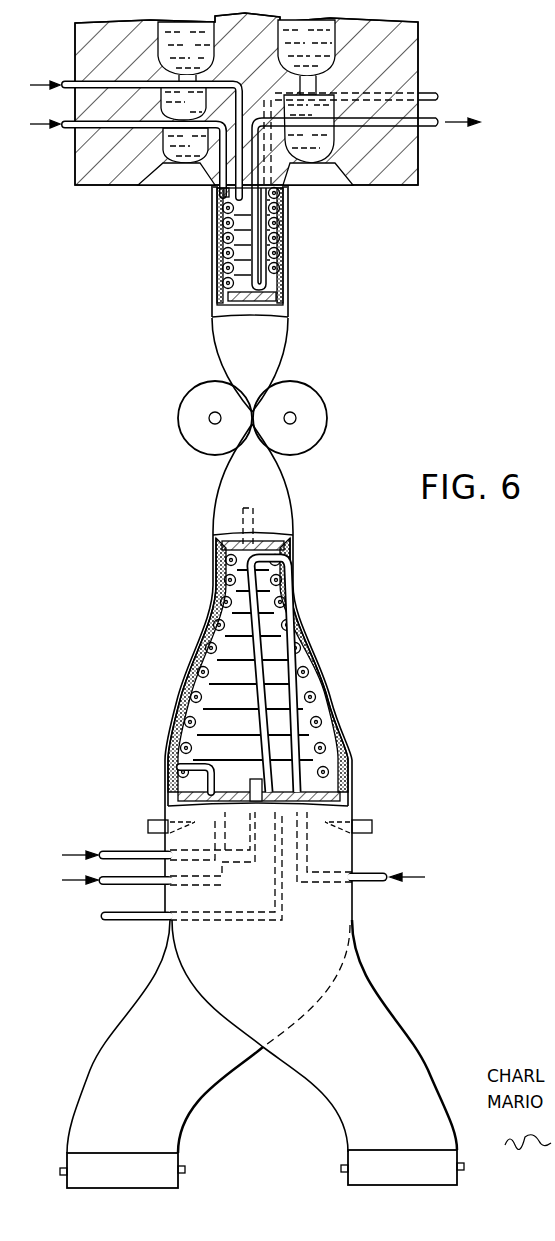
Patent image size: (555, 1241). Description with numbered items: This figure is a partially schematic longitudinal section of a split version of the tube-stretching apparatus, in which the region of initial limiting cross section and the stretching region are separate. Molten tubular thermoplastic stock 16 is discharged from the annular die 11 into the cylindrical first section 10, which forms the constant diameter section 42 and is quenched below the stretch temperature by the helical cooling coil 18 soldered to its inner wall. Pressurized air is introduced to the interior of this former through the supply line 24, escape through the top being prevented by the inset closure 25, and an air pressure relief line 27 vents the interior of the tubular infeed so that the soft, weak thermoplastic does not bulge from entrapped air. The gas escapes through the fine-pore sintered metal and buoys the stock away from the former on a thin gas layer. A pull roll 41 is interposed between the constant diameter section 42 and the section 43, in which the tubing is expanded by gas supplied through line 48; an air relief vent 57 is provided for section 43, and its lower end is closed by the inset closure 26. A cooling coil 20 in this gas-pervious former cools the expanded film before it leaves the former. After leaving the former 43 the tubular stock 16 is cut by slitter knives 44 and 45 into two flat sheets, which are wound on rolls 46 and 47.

The first section 10 is at (216, 210).
The annular die 11 is at (283, 173).
The tubular thermoplastic stock 16 is at (288, 302).
The helical cooling coil 18 is at (222, 222).
The cooling coil 20 is at (200, 673).
The supply line 24 is at (65, 82).
The inset closure 25 is at (272, 184).
The inset closure 26 is at (338, 786).
The air pressure relief line 27 is at (433, 92).
The pull roll 41 is at (315, 397).
The constant diameter section 42 is at (283, 217).
The expansion section 43 is at (297, 597).
The slitter knife 44 is at (150, 824).
The slitter knife 45 is at (372, 826).
The roll 46 is at (70, 1165).
The roll 47 is at (455, 1160).
The gas supply line 48 is at (100, 851).
The air relief vent 57 is at (110, 921).